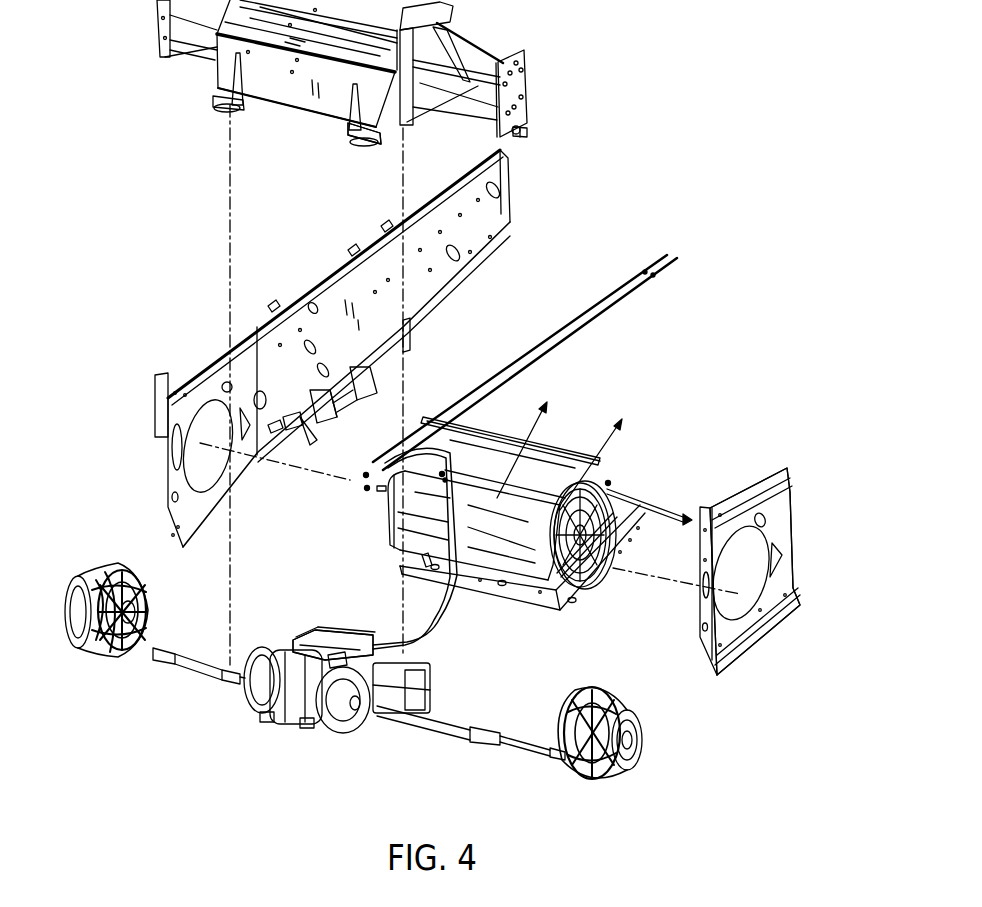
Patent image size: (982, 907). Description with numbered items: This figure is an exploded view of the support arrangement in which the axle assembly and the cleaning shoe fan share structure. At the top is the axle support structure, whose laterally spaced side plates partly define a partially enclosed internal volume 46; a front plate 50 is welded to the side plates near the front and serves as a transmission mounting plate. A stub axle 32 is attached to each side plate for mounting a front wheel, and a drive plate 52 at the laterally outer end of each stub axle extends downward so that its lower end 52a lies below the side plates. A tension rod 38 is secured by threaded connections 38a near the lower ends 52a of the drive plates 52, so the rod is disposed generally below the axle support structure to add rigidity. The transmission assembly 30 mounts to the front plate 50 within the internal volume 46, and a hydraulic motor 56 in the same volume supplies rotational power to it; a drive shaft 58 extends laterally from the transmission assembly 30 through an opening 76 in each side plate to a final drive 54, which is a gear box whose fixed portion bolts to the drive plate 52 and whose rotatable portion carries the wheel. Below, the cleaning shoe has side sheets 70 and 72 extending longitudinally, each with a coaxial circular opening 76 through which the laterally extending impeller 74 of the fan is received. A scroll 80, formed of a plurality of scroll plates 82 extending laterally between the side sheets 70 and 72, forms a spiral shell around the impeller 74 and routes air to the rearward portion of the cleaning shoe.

The transmission assembly 30 is at (282, 735).
The stub axle 32 is at (507, 43).
The tension rod 38 is at (470, 120).
The threaded connection 38a is at (520, 140).
The internal volume 46 is at (304, 122).
The front plate 50 is at (273, 90).
The drive plate 52 is at (517, 83).
The lower end of drive plate 52a is at (520, 130).
The final drive 54 is at (113, 563).
The motor 56 is at (358, 597).
The drive shaft 58 is at (198, 673).
The side sheet 70 is at (388, 125).
The side sheet 72 is at (212, 97).
The impeller 74 is at (607, 482).
The circular opening 76 is at (215, 425).
The scroll 80 is at (375, 512).
The scroll plate 82 is at (497, 498).